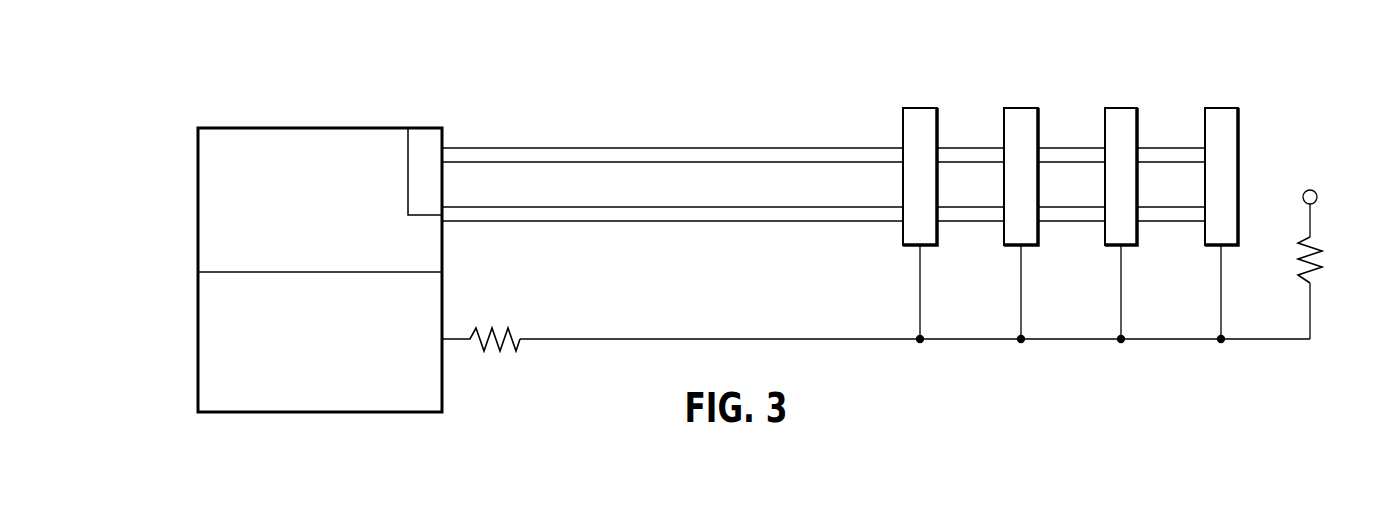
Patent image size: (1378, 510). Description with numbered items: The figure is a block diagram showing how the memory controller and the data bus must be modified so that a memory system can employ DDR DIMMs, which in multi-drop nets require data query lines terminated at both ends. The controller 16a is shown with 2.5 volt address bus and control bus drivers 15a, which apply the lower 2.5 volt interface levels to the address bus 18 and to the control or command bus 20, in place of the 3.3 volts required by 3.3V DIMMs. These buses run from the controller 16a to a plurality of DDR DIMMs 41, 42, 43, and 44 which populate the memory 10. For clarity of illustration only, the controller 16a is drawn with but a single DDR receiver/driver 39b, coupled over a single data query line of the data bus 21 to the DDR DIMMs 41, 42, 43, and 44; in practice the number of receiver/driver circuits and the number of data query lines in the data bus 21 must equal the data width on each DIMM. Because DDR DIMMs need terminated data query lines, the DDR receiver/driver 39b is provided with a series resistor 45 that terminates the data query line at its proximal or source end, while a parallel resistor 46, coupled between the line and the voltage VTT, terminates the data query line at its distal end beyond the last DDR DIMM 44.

The memory 10 is at (878, 80).
The 2.5 volt address bus and control bus drivers 15a is at (425, 128).
The controller 16a is at (268, 128).
The address bus 18 is at (643, 207).
The control or command bus 20 is at (643, 148).
The data bus 21 is at (643, 339).
The DDR receiver/driver 39b is at (443, 372).
The DDR DIMM 41 is at (920, 108).
The DDR DIMM 42 is at (1021, 108).
The DDR DIMM 43 is at (1120, 108).
The DDR DIMM 44 is at (1220, 108).
The series resistor 45 is at (506, 326).
The parallel resistor 46 is at (1326, 254).